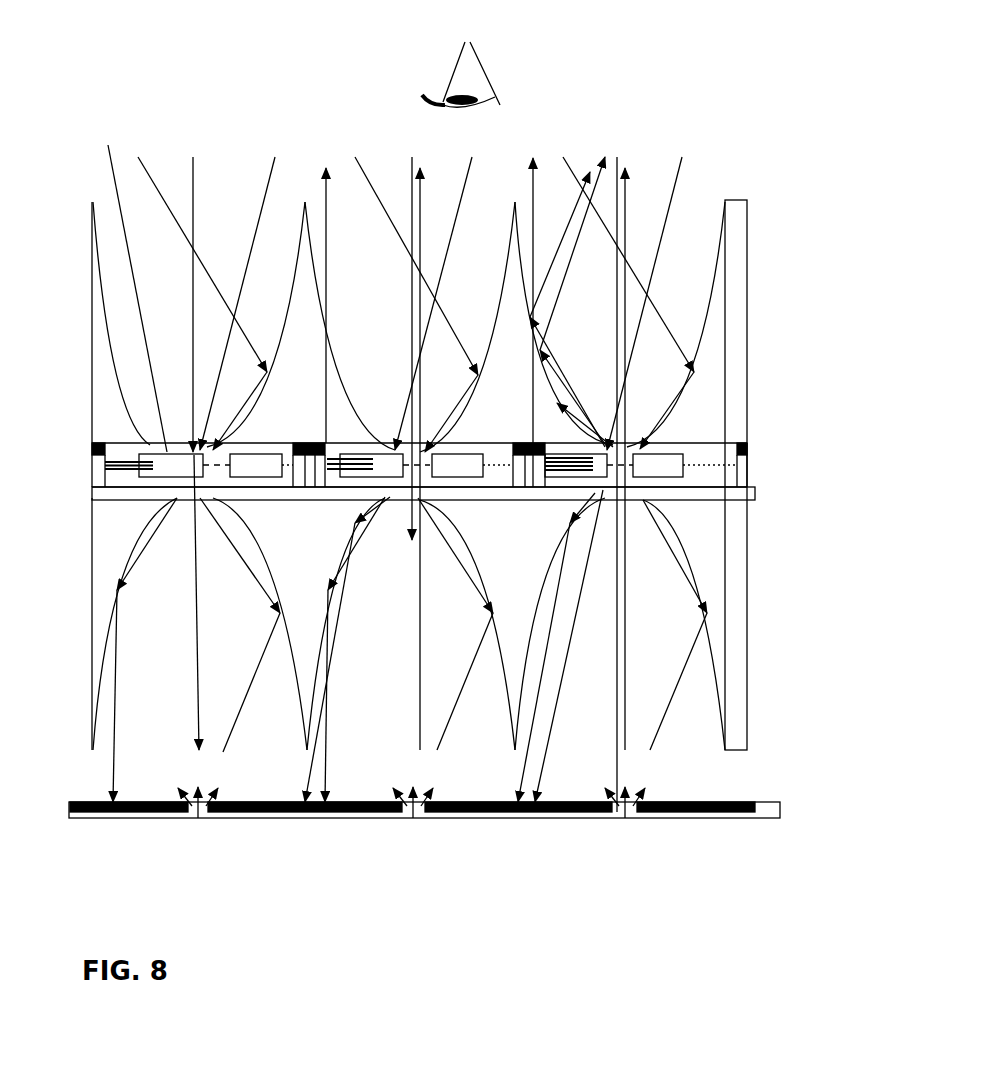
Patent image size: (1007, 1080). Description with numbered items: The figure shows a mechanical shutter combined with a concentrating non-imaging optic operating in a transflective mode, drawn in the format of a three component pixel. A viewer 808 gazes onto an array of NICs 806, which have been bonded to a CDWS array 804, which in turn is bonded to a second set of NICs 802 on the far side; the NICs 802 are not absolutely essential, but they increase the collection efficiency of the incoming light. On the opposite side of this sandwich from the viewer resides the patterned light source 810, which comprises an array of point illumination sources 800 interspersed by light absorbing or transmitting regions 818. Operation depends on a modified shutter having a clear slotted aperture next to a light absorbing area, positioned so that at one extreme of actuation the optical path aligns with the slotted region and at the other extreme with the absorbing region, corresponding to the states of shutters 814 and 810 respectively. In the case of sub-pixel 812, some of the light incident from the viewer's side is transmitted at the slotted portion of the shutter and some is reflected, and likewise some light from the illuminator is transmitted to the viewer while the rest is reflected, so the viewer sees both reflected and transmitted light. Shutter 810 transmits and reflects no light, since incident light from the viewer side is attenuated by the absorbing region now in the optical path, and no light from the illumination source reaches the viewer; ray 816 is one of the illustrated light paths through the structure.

The point illumination sources 800 is at (200, 818).
The NICs 802 is at (737, 642).
The CDWS array 804 is at (757, 470).
The array of NICs 806 is at (737, 357).
The viewer 808 is at (505, 72).
The patterned light source / shutter 810 is at (210, 128).
The sub-pixel 812 is at (372, 137).
The shutter 814 is at (650, 122).
The light ray 816 is at (127, 283).
The light absorbing (or transmitting) regions 818 is at (748, 803).